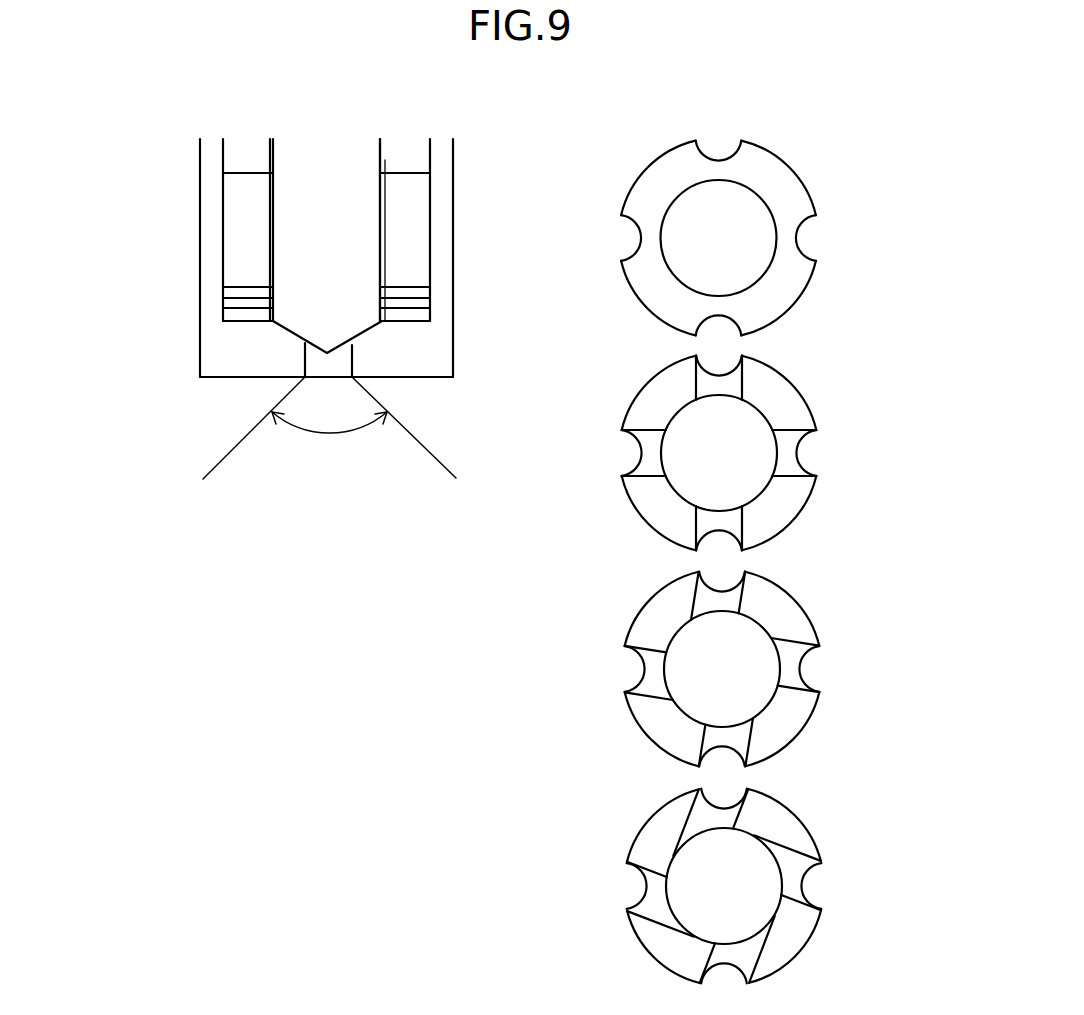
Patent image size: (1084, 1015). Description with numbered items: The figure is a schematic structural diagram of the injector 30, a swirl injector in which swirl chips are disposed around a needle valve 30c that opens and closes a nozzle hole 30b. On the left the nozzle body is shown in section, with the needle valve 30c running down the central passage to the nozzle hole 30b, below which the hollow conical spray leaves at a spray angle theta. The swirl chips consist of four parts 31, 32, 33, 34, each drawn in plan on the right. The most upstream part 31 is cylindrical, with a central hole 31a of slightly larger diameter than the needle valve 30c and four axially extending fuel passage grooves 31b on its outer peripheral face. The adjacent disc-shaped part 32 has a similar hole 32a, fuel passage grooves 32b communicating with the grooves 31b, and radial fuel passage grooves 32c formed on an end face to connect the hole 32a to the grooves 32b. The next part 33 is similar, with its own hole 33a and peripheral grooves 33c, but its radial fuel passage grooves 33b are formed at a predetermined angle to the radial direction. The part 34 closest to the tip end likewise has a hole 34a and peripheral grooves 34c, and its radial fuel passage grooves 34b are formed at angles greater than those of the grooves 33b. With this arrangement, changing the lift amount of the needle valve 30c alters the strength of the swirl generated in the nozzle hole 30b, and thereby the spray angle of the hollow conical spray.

The injector 30 is at (200, 170).
The nozzle hole 30b is at (315, 353).
The needle valve 30c is at (347, 173).
The part 31 is at (654, 238).
The hole 31a is at (728, 205).
The fuel passage grooves 31b is at (803, 227).
The part 32 is at (657, 405).
The hole 32a is at (730, 420).
The fuel passage grooves 32b is at (803, 441).
The radial fuel passage grooves 32c is at (788, 463).
The part 33 is at (659, 534).
The central hole 33a is at (733, 635).
The radial fuel passage grooves 33b is at (807, 657).
The slot 33c is at (793, 678).
The part 34 is at (658, 648).
The central hole 34a is at (735, 852).
The radial fuel passage grooves 34b is at (807, 873).
The slot 34c is at (792, 887).